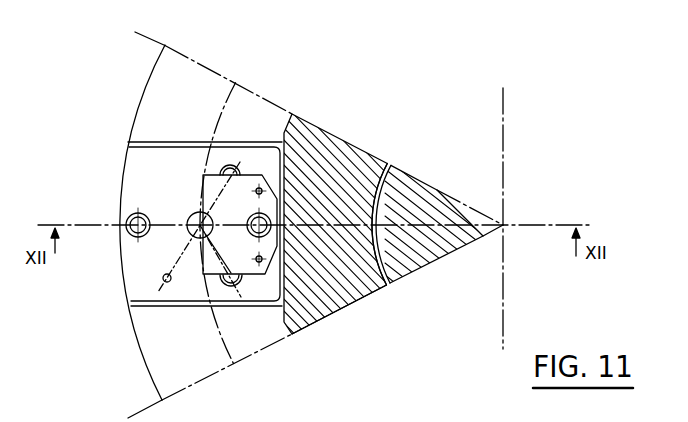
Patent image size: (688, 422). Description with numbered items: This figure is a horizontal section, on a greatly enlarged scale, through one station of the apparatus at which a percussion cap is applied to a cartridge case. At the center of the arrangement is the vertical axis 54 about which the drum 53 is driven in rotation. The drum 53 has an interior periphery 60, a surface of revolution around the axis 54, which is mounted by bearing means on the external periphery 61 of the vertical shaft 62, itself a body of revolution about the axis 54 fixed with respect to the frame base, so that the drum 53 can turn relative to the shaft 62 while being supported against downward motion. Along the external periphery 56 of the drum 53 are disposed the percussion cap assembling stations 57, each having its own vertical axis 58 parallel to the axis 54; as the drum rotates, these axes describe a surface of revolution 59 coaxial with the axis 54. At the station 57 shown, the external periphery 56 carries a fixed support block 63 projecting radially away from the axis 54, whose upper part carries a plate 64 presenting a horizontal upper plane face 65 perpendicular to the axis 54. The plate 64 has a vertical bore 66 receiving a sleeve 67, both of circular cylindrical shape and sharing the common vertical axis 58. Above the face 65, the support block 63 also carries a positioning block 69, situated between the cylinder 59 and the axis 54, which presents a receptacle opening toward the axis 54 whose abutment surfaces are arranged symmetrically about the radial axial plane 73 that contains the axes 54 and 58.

The drum 53 is at (303, 338).
The vertical axis 54 is at (505, 222).
The external periphery 56 is at (283, 116).
The percussion cap assembling station 57 is at (111, 311).
The vertical axis of assembly station 58 is at (190, 216).
The surface of revolution 59 is at (222, 108).
The interior periphery 60 is at (388, 180).
The external periphery of shaft 61 is at (377, 290).
The vertical shaft 62 is at (432, 249).
The support block 63 is at (180, 315).
The plate 64 is at (134, 200).
The upper plane face 65 is at (143, 162).
The vertical bore 66 is at (192, 232).
The sleeve 67 is at (190, 228).
The positioning block 69 is at (272, 206).
The radial axial plane 73 is at (303, 228).